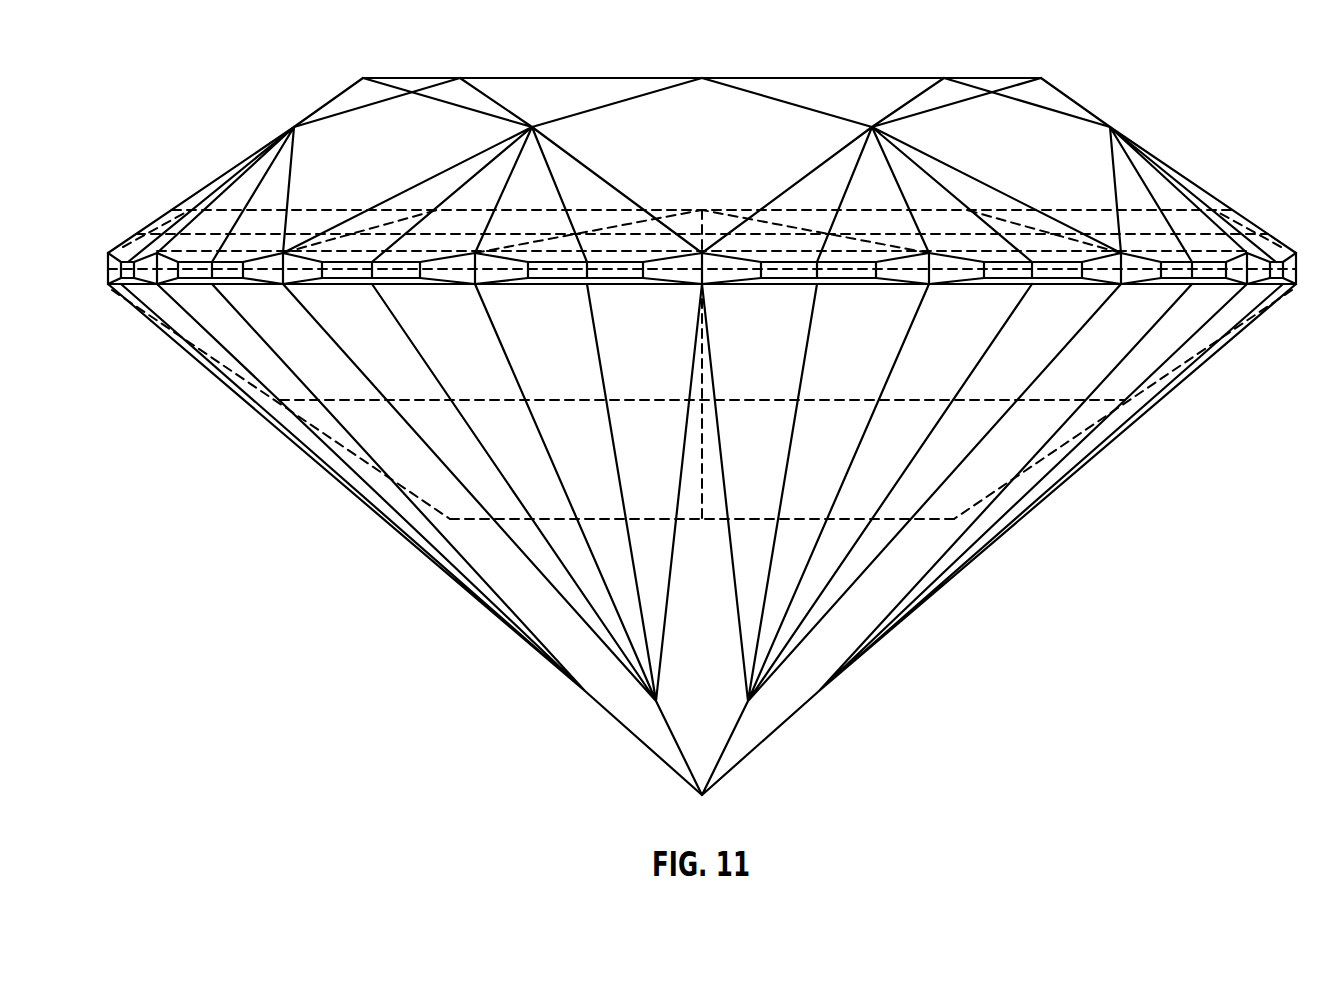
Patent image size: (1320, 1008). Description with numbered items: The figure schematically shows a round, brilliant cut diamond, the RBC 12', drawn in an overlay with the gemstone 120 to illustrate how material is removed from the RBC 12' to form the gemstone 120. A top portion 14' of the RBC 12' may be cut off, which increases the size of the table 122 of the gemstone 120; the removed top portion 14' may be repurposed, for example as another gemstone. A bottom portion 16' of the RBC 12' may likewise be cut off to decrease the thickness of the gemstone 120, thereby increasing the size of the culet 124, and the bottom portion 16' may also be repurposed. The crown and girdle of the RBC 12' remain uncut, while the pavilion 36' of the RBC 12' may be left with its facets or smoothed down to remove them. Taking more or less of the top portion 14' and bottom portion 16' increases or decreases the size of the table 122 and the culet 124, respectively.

The top portion 14' is at (698, 59).
The RBC 12' is at (294, 170).
The bottom portion 16' is at (405, 539).
The table 122 is at (1140, 207).
The gemstone 120 is at (1192, 204).
The pavilion 36' is at (702, 407).
The culet 124 is at (915, 522).